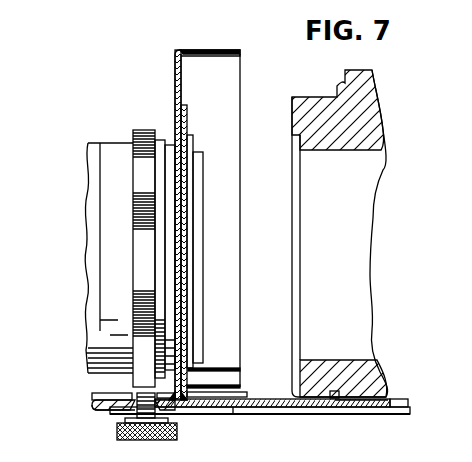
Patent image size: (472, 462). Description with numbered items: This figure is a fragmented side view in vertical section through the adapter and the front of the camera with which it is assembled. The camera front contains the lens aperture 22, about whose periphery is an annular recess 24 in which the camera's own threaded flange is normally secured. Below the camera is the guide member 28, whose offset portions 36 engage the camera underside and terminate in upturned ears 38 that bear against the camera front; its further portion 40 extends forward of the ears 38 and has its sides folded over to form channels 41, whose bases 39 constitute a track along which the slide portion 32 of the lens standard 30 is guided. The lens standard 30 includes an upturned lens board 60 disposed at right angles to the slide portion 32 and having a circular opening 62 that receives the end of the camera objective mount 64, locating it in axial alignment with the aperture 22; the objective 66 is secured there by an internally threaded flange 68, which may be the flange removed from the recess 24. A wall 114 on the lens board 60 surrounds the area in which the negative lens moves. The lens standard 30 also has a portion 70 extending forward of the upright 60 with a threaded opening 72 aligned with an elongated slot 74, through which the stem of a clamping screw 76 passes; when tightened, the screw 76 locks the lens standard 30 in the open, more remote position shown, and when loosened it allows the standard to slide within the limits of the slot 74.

The wall 114 is at (218, 50).
The upright lens board 60 is at (173, 70).
The lens standard 30 is at (174, 100).
The internally threaded flange 68 is at (195, 135).
The circular-shaped opening 62 is at (200, 167).
The annular recess 24 is at (294, 218).
The aperture 22 is at (355, 249).
The objective 66 is at (88, 195).
The objective mount 64 is at (107, 279).
The channels 41 is at (97, 394).
The further portion 40 is at (93, 403).
The bases 39 is at (107, 416).
The clamping screw 76 is at (118, 432).
The threaded opening 72 is at (162, 395).
The portion 70 is at (180, 410).
The elongated slot 74 is at (232, 412).
The guide member 28 is at (285, 415).
The slide portion 32 is at (267, 403).
The upturned ears 38 is at (333, 391).
The offset portions 36 is at (395, 400).